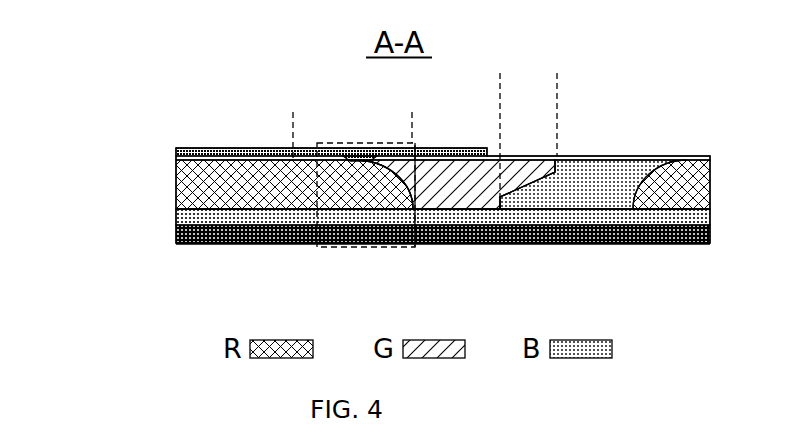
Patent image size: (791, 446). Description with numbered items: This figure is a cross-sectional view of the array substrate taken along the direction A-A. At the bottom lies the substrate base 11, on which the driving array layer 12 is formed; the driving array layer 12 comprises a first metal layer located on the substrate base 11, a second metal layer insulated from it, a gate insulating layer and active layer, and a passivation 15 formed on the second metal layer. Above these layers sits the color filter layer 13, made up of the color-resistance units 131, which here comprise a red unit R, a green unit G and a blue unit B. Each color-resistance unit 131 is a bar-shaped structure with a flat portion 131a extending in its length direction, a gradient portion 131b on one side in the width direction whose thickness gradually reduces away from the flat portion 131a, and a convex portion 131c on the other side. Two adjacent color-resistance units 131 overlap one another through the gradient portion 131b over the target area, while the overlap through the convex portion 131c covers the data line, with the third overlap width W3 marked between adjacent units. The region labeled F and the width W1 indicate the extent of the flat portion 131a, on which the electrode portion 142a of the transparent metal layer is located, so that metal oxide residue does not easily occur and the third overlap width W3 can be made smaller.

The substrate base 11 is at (176, 240).
The driving array layer 12 is at (176, 218).
The color filter layer 13 is at (397, 190).
The color-resistance unit 131 is at (252, 206).
The flat portion 131a is at (212, 158).
The gradient portion 131b is at (400, 162).
The convex portion 131c is at (533, 176).
The passivation 15 is at (176, 158).
The light shielding portion 142a is at (176, 149).
The region F is at (418, 141).
The width W1 is at (293, 119).
The third overlap width W3 is at (500, 83).